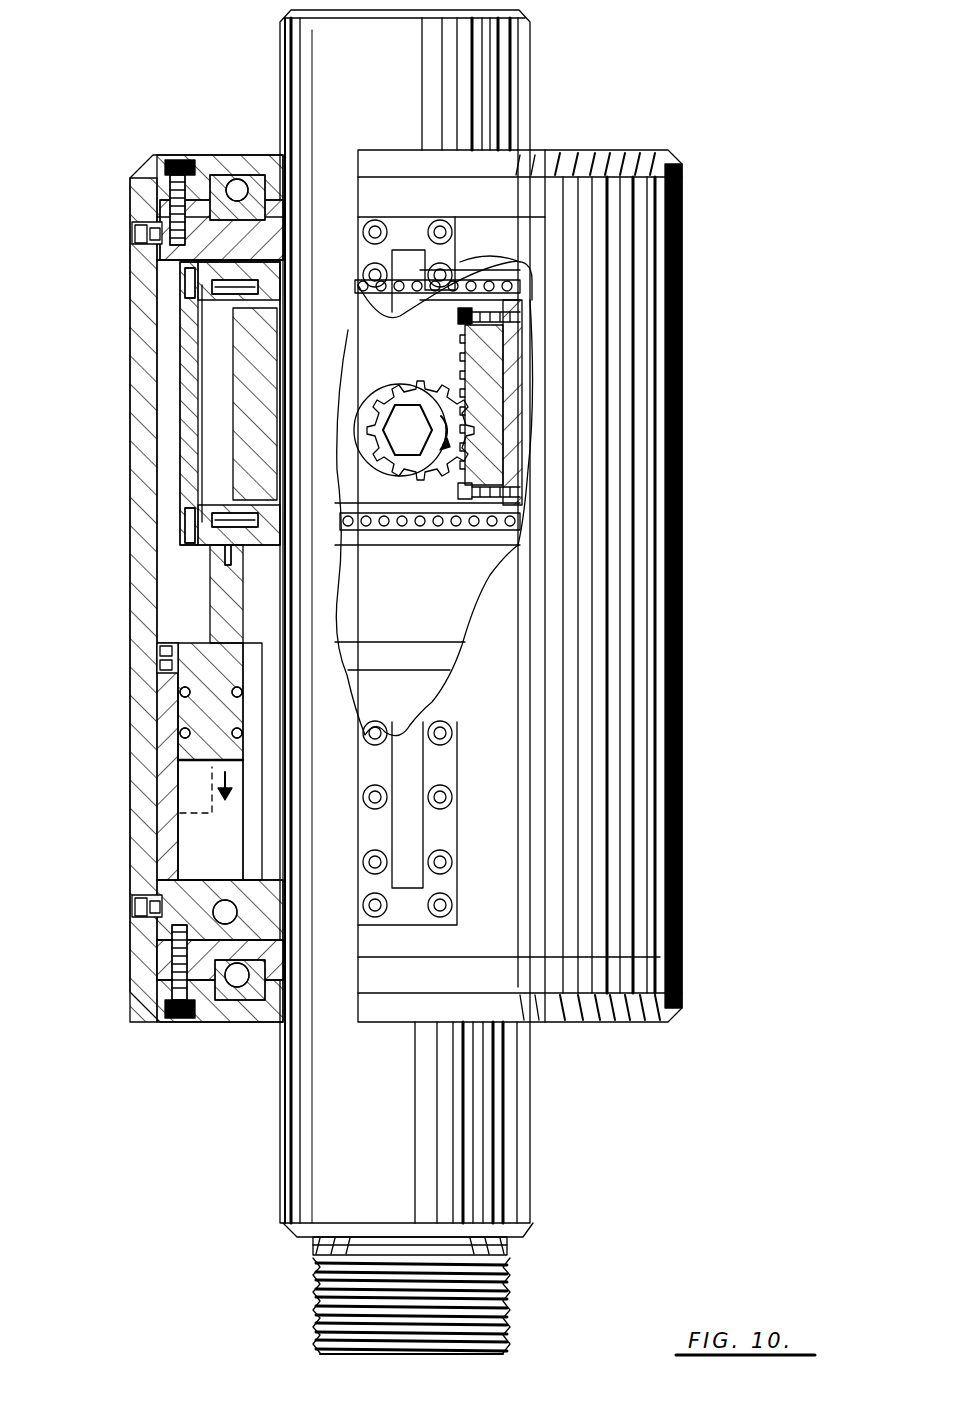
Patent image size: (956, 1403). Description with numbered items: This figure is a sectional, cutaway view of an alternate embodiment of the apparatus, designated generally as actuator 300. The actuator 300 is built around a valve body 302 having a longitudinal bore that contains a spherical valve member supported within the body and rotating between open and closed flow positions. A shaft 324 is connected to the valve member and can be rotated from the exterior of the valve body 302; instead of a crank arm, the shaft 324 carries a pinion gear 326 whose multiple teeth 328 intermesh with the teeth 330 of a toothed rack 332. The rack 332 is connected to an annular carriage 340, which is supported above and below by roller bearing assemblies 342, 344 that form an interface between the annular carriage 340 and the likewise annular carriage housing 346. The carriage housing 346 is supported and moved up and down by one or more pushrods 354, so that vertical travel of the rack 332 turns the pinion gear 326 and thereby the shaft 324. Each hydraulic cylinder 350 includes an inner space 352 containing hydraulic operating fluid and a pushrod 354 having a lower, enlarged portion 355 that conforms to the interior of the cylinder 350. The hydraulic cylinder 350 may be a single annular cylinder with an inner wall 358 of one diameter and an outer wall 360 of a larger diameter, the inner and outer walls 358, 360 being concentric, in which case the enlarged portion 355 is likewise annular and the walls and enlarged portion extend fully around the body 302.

The actuator 300 is at (703, 140).
The valve body 302 is at (530, 65).
The shaft 324 is at (413, 400).
The pinion gear 326 is at (366, 540).
The teeth 328 is at (443, 547).
The teeth 330 is at (462, 348).
The toothed rack 332 is at (532, 262).
The annular carriage 340 is at (235, 398).
The roller bearing assembly 342 is at (242, 299).
The roller bearing assembly 344 is at (205, 515).
The carriage housing 346 is at (190, 458).
The hydraulic cylinder 350 is at (168, 760).
The inner space 352 is at (207, 845).
The pushrod 354 is at (218, 600).
The enlarged portion 355 is at (205, 708).
The inner wall 358 is at (262, 845).
The outer wall 360 is at (165, 812).